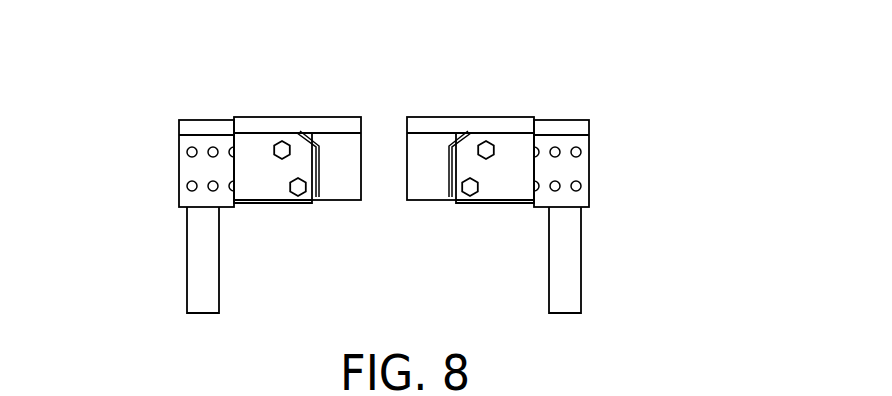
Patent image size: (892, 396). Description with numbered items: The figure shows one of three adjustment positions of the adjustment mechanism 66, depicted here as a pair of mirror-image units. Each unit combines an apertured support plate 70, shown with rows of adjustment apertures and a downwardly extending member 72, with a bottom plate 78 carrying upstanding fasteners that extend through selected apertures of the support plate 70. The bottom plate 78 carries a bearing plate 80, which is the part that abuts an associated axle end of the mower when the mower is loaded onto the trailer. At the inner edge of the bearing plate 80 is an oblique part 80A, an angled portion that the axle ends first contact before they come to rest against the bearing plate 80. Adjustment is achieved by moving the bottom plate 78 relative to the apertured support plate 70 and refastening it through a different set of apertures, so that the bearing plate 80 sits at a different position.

The adjustment mechanism 66 is at (175, 110).
The support plate 70 is at (207, 167).
The support leg 72 is at (202, 272).
The bottom plate 78 is at (343, 190).
The bearing plate 80 is at (322, 162).
The oblique part 80A is at (318, 140).